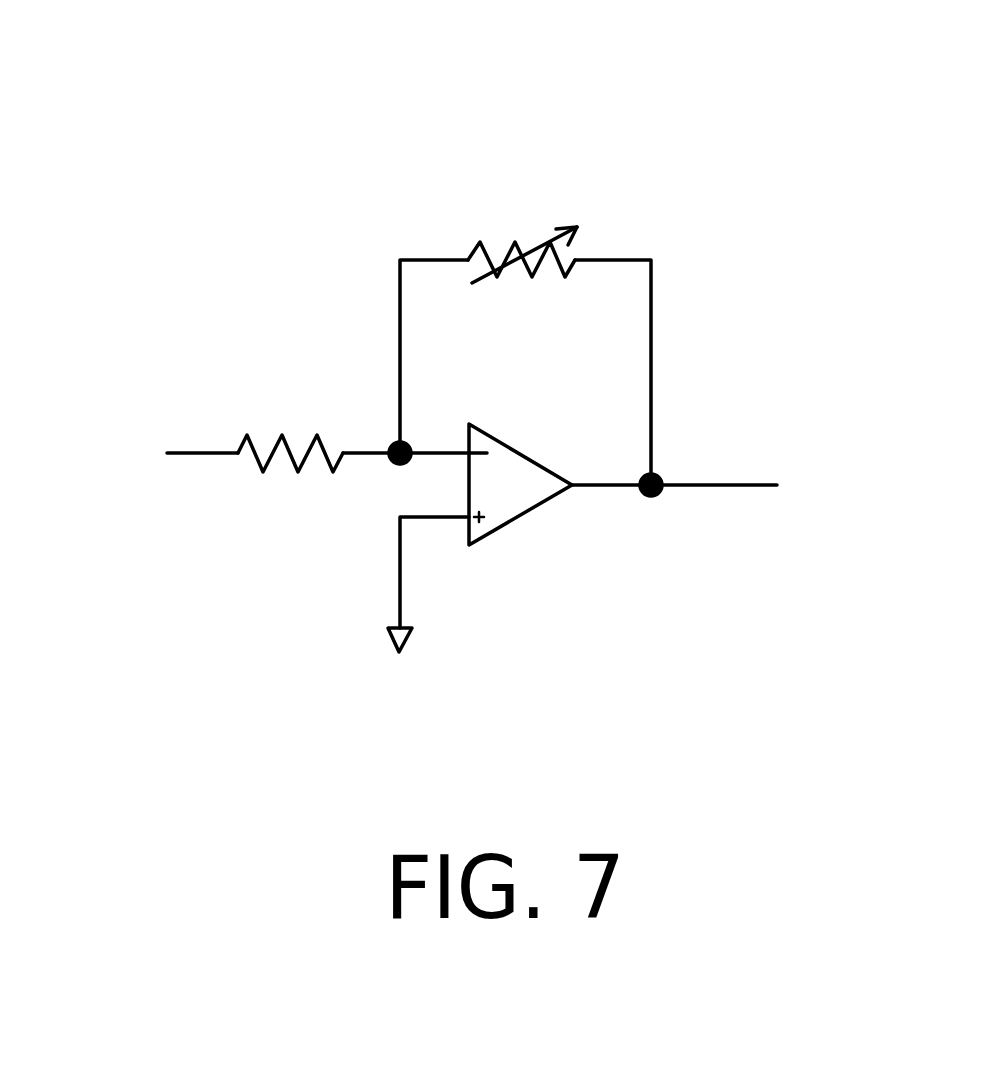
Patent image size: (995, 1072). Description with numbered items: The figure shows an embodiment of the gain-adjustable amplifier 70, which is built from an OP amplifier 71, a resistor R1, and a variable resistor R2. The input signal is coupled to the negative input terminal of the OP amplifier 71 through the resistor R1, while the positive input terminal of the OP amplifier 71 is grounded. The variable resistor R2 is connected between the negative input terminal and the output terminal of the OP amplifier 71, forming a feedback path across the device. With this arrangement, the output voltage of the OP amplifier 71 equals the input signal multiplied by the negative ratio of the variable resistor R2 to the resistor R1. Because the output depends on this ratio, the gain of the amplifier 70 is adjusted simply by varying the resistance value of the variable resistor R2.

The gain-adjustable amplifier 70 is at (237, 145).
The OP amplifier 71 is at (517, 482).
The resistor R1 is at (290, 481).
The variable resistor R2 is at (522, 280).